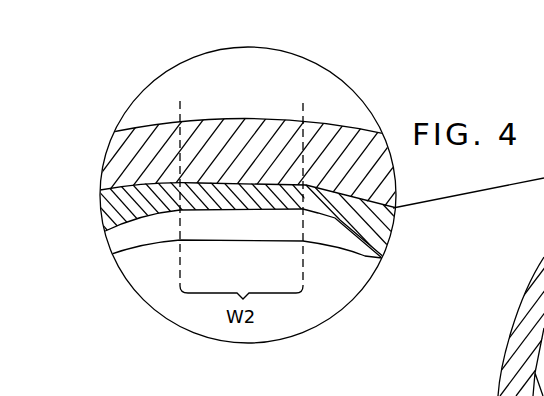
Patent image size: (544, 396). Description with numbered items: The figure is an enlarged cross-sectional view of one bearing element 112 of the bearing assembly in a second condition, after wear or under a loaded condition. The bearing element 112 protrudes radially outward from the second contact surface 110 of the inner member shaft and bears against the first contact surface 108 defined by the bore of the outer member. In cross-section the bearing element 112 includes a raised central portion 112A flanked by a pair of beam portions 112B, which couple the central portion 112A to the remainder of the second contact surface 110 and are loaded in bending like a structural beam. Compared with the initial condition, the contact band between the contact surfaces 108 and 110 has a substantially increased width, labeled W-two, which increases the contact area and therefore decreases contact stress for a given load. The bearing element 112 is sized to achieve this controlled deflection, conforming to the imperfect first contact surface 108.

The first contact surface 108 is at (386, 224).
The second contact surface 110 is at (122, 188).
The bearing element 112 is at (253, 248).
The raised central portion 112A is at (272, 195).
The beam portions 112B is at (145, 222).